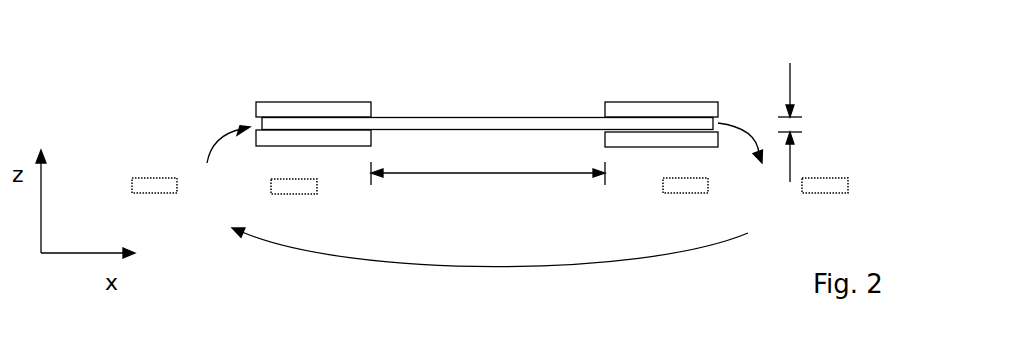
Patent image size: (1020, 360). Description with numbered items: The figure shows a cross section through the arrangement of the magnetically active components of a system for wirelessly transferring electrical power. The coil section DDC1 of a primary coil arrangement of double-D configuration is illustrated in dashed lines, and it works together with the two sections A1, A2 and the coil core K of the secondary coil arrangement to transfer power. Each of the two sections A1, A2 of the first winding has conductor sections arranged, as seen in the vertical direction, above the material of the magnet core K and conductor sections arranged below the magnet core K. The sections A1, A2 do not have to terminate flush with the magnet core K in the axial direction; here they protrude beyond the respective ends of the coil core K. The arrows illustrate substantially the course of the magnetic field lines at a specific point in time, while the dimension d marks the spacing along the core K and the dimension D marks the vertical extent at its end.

The coil core K is at (413, 117).
The first section of the first winding A1 is at (276, 102).
The second section of the first winding A2 is at (638, 103).
The coil section of the primary coil arrangement DDC1 is at (152, 178).
The distance between antennas d is at (488, 185).
The thickness of carrier D is at (812, 122).